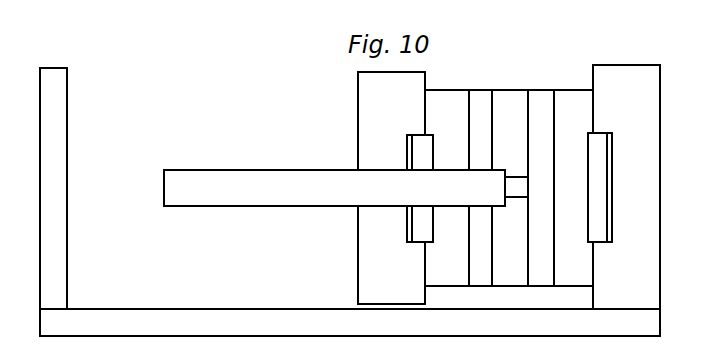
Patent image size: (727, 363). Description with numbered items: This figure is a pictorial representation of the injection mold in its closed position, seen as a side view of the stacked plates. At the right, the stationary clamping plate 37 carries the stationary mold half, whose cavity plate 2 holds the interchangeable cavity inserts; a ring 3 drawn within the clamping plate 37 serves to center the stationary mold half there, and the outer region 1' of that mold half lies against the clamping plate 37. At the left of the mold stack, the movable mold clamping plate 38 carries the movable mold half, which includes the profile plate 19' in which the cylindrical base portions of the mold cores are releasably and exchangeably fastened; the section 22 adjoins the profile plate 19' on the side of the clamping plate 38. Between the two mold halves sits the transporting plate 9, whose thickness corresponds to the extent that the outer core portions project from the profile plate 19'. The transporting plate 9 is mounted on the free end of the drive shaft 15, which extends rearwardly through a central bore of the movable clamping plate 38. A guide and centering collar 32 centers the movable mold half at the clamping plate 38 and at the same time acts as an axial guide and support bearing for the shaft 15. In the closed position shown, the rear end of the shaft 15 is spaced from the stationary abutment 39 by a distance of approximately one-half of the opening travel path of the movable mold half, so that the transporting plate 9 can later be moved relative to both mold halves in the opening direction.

The stationary abutment 39 is at (55, 85).
The shaft 15 is at (275, 170).
The movable mold clamping plate 38 is at (377, 105).
The guide and centering collar 32 is at (420, 225).
The cylinder end section 22 is at (440, 102).
The profile plate 19' is at (494, 152).
The transporting plate 9 is at (511, 101).
The cavity plate 2 is at (542, 101).
The cylinder end section 1' is at (581, 152).
The stationary clamping plate 37 is at (639, 87).
The ring 3 is at (598, 160).